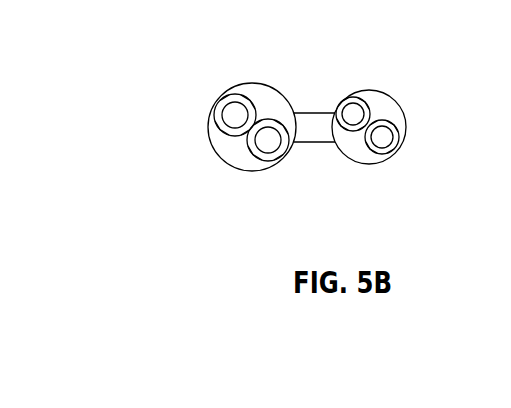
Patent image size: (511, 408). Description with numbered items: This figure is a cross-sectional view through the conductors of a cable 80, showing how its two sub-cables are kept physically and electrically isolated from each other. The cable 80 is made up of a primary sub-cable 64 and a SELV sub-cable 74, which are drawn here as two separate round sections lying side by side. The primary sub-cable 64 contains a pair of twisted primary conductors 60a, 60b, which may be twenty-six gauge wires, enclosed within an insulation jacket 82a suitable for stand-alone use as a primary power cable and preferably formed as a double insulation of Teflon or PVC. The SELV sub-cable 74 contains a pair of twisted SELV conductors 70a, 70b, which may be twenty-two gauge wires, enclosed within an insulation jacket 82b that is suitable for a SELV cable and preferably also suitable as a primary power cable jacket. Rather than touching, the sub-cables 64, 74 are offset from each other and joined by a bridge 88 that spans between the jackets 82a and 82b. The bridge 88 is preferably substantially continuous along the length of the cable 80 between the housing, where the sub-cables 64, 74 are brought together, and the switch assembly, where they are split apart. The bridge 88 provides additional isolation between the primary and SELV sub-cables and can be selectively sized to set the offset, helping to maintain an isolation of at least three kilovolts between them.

The cable 80 is at (197, 49).
The sub-cable 64 is at (279, 82).
The insulation jacket 82a is at (210, 147).
The insulation jacket 82b is at (398, 108).
The primary conductor 60a is at (236, 112).
The primary conductor 60b is at (266, 148).
The SELV conductor 70a is at (384, 143).
The SELV conductor 70b is at (355, 110).
The sub-cable 74 is at (391, 162).
The bridge 88 is at (320, 143).